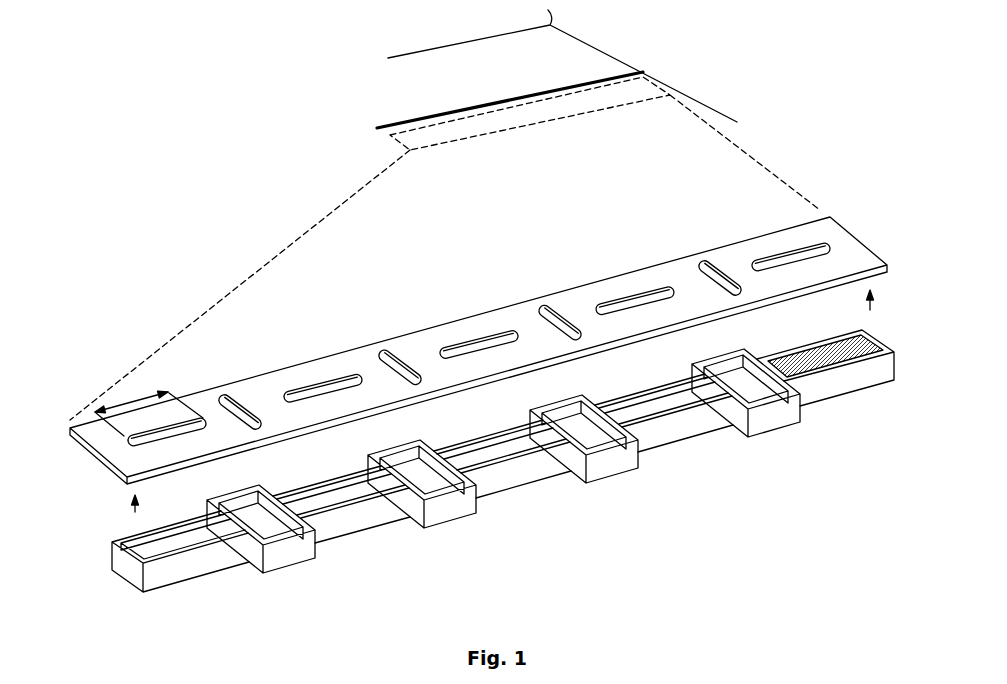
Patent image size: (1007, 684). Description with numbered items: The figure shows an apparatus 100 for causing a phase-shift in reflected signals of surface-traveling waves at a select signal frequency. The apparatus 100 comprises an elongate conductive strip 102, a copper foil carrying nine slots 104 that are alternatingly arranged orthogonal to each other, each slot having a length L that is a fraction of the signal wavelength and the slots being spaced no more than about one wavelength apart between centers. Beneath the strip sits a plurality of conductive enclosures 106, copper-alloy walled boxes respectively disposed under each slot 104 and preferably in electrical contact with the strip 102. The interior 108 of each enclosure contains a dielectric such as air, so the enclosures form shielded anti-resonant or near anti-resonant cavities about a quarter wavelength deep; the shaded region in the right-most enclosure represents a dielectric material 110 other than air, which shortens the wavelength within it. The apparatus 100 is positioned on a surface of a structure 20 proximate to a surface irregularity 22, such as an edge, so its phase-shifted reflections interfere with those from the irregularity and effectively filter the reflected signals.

The structure 20 is at (620, 55).
The surface irregularity 22 is at (377, 128).
The apparatus 100 is at (805, 175).
The elongate conductive strip 102 is at (843, 226).
The slots 104 is at (366, 350).
The conductive enclosures 106 is at (473, 515).
The interior 108 is at (445, 478).
The dielectric material 110 is at (818, 365).